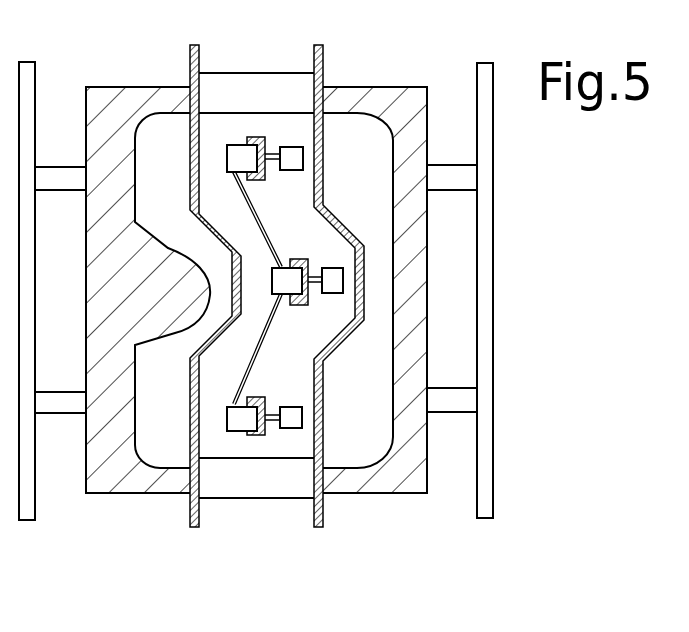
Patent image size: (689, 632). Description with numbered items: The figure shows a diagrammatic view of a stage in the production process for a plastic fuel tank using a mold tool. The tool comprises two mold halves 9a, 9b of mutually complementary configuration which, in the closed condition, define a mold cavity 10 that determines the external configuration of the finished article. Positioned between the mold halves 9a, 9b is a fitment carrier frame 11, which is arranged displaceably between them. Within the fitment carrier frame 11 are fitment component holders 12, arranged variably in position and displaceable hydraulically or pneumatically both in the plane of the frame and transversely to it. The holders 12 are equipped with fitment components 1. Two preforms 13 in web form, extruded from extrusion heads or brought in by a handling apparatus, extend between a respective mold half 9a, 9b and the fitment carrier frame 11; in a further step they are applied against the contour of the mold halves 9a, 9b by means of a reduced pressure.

The fitment component 1 is at (242, 422).
The first mold half 9a is at (123, 88).
The second mold half 9b is at (383, 92).
The mold cavity 10 is at (162, 447).
The fitment carrier frame 11 is at (262, 483).
The fitment component holder 12 is at (289, 423).
The preform 13 is at (313, 132).